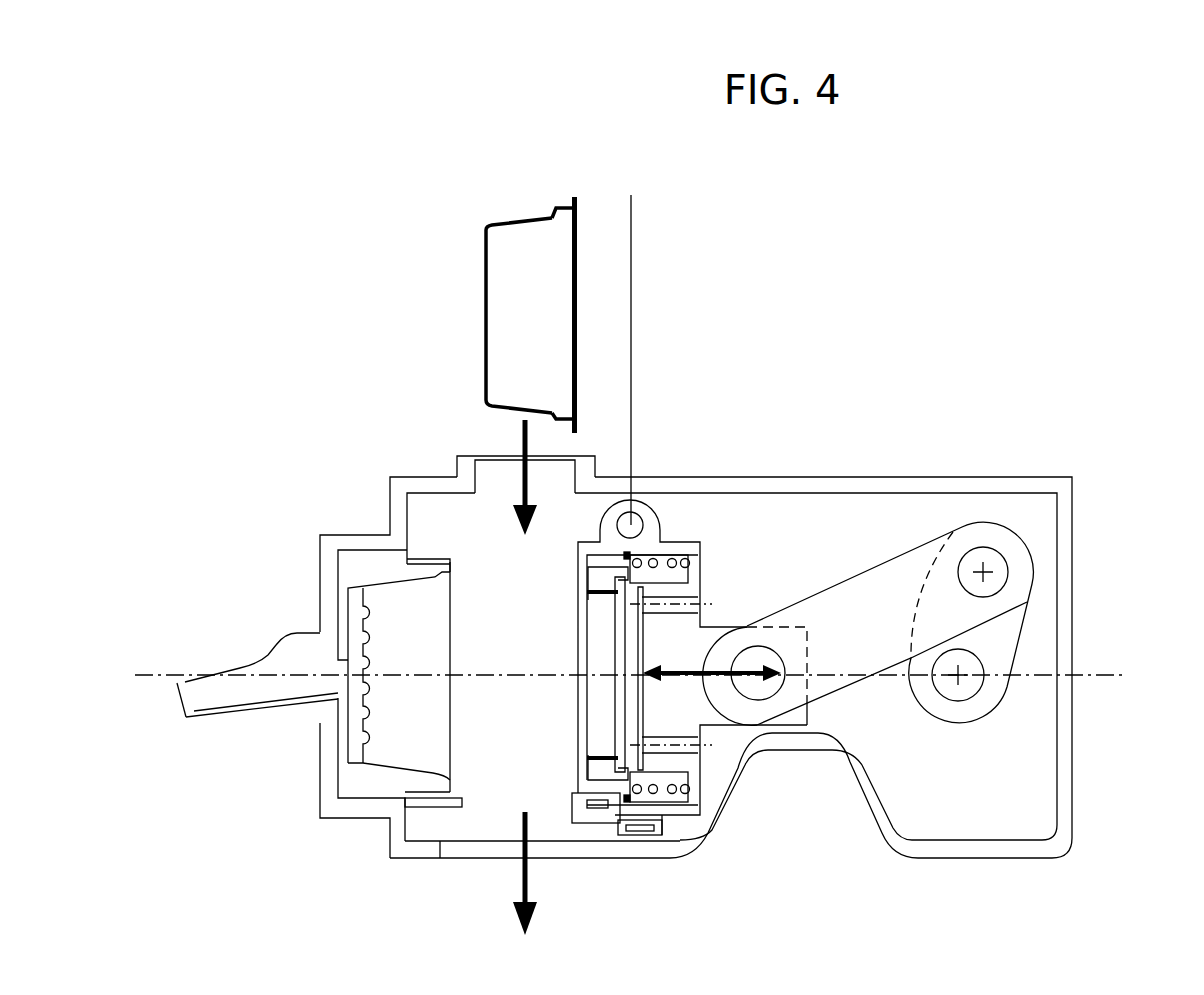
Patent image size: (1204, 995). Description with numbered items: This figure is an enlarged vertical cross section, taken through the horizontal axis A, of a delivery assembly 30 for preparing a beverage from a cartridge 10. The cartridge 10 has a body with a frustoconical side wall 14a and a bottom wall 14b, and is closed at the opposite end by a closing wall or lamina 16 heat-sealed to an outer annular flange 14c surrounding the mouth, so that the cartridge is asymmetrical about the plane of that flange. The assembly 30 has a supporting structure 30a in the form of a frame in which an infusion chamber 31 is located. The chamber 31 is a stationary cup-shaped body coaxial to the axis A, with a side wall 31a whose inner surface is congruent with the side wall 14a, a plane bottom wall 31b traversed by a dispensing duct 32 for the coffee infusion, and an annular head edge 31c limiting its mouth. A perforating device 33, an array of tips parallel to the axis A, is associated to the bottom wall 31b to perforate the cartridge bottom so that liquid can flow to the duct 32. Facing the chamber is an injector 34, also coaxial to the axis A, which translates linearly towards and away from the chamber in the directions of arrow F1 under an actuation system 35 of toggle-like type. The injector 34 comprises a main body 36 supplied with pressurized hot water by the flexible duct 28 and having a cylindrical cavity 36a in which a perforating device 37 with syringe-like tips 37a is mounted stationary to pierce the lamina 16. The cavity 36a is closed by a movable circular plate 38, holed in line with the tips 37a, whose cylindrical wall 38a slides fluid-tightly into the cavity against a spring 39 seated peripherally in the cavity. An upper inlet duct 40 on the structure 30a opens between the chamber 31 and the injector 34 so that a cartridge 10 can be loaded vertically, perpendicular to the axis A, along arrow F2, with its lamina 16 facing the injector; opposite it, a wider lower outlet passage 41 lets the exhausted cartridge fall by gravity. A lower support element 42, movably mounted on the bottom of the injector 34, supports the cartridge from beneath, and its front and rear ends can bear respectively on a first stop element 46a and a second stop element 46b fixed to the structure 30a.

The cartridge 10 is at (507, 282).
The side wall 14a is at (518, 218).
The bottom wall 14b is at (482, 299).
The outer annular flange 14c is at (571, 206).
The closing wall 16 is at (578, 262).
The duct 28 is at (632, 288).
The delivery assembly 30 is at (1121, 447).
The supporting structure 30a is at (1074, 780).
The infusion chamber 31 is at (428, 556).
The side wall 31a is at (433, 781).
The bottom wall 31b is at (340, 735).
The annular head edge 31c is at (451, 566).
The dispensing duct 32 is at (206, 700).
The perforating device 33 is at (384, 621).
The injector device 34 is at (723, 551).
The actuation system 35 is at (911, 527).
The main body 36 is at (716, 617).
The cavity 36a is at (603, 635).
The perforating device 37 is at (606, 700).
The tips 37a is at (584, 592).
The movable circular plate 38 is at (598, 702).
The cylindrical wall 38a is at (613, 834).
The spring 39 is at (677, 548).
The upper inlet duct 40 is at (497, 462).
The lower outlet passage 41 is at (455, 860).
The lower support element 42 is at (594, 826).
The first stop element 46a is at (432, 808).
The second stop element 46b is at (680, 827).
The arrow F1 is at (696, 684).
The arrow F2 is at (519, 432).
The axis A is at (1097, 673).